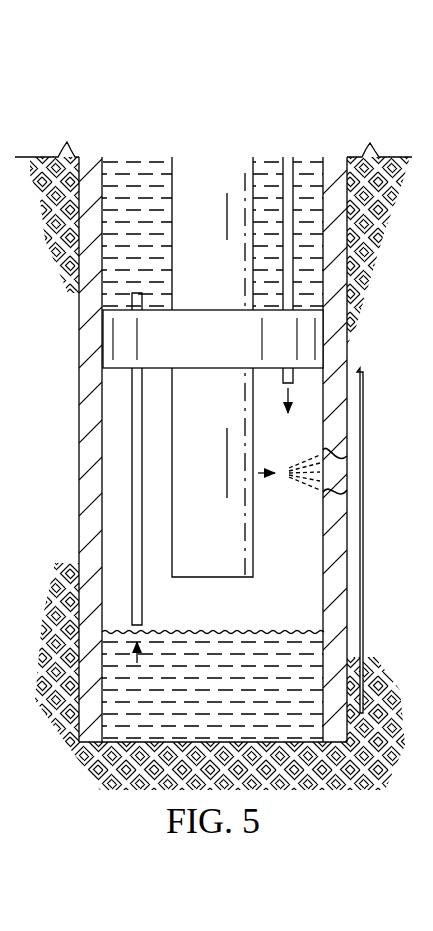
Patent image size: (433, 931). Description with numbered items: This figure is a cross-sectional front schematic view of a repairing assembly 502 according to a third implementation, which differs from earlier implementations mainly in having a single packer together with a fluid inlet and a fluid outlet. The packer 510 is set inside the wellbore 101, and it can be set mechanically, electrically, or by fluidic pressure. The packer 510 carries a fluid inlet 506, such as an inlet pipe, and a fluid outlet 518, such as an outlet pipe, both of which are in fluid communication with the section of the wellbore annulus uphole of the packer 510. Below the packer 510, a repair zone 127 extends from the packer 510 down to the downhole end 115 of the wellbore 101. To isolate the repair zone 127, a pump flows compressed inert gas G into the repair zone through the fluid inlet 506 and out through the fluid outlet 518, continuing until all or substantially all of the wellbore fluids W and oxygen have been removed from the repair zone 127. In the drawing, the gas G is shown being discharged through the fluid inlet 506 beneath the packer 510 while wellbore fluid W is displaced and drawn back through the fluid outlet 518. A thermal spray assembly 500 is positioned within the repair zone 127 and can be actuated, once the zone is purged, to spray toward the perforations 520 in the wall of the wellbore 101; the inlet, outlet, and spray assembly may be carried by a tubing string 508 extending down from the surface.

The repairing assembly 502 is at (130, 130).
The fluid inlet 506 is at (277, 168).
The packer 510 is at (215, 308).
The wellbore 101 is at (88, 376).
The thermal spray assembly 500 is at (268, 490).
The perforations 520 is at (337, 478).
The fluid outlet 518 is at (144, 592).
The production tubing 508 is at (255, 548).
The repair zone 127 is at (363, 532).
The downhole end 115 is at (253, 742).
The water W is at (125, 260).
The gas G is at (272, 380).